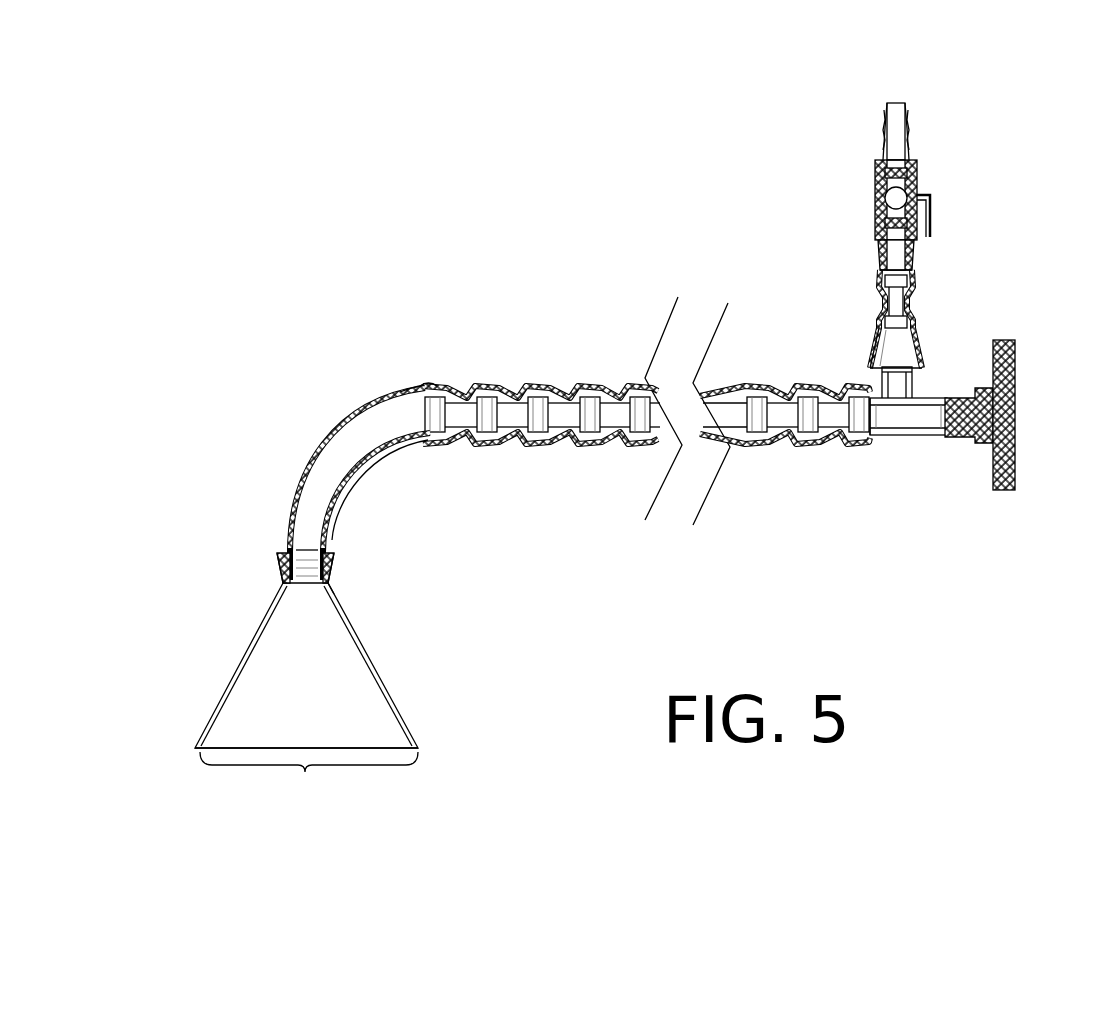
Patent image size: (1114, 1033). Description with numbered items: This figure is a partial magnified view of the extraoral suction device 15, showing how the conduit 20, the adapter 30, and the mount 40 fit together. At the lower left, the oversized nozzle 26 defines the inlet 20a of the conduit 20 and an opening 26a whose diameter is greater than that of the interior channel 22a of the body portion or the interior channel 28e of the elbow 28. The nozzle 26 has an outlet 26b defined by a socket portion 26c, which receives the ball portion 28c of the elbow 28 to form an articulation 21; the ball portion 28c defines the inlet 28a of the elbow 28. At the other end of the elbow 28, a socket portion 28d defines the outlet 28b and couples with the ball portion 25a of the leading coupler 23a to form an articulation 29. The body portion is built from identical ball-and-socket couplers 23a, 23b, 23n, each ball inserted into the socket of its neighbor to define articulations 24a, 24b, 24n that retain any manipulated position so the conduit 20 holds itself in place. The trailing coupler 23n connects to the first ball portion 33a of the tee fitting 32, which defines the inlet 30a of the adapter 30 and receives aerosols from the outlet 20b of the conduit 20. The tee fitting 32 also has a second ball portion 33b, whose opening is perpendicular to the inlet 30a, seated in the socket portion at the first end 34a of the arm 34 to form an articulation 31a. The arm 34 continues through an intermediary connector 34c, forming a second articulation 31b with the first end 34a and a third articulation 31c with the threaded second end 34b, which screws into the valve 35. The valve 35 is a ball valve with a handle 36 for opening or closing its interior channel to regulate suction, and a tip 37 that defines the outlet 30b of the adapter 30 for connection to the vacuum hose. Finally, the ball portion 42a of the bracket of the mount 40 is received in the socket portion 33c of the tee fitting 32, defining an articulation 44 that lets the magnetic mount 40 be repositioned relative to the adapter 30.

The extraoral suction device 15 is at (508, 174).
The conduit 20 is at (541, 399).
The inlet 20a is at (310, 708).
The outlet 20b is at (910, 287).
The articulation 21 is at (328, 550).
The interior channel 22a is at (617, 384).
The leading coupler 23a is at (480, 442).
The coupler 23b is at (532, 442).
The trailing coupler 23n is at (837, 442).
The articulation 24a is at (507, 391).
The articulation 24b is at (585, 446).
The articulation 24n is at (785, 426).
The ball portion 25a is at (462, 384).
The nozzle 26 is at (225, 695).
The opening 26a is at (306, 780).
The outlet 26b is at (342, 596).
The socket portion 26c is at (285, 578).
The elbow 28 is at (323, 432).
The inlet 28a is at (290, 547).
The outlet 28b is at (437, 372).
The ball portion 28c is at (342, 582).
The socket portion 28d is at (415, 385).
The interior channel 28e is at (320, 485).
The articulation 29 is at (450, 440).
The adapter 30 is at (960, 413).
The inlet 30a is at (880, 440).
The outlet 30b is at (890, 94).
The articulation 31a is at (880, 345).
The second articulation 31b is at (915, 300).
The third articulation 31c is at (930, 222).
The tee fitting 32 is at (900, 438).
The first ball portion 33a is at (857, 440).
The second ball portion 33b is at (918, 332).
The socket portion 33c is at (950, 440).
The arm 34 is at (911, 290).
The first end 34a is at (884, 275).
The second end 34b is at (882, 255).
The intermediary connector 34c is at (917, 258).
The valve 35 is at (900, 155).
The handle 36 is at (920, 186).
The tip 37 is at (910, 118).
The mount 40 is at (985, 390).
The ball portion 42a is at (990, 356).
The articulation 44 is at (1015, 440).